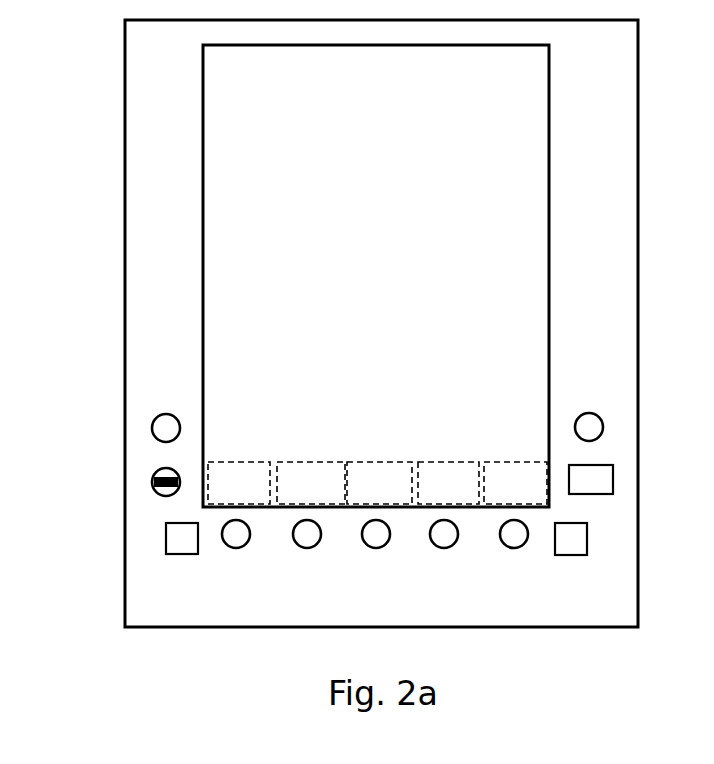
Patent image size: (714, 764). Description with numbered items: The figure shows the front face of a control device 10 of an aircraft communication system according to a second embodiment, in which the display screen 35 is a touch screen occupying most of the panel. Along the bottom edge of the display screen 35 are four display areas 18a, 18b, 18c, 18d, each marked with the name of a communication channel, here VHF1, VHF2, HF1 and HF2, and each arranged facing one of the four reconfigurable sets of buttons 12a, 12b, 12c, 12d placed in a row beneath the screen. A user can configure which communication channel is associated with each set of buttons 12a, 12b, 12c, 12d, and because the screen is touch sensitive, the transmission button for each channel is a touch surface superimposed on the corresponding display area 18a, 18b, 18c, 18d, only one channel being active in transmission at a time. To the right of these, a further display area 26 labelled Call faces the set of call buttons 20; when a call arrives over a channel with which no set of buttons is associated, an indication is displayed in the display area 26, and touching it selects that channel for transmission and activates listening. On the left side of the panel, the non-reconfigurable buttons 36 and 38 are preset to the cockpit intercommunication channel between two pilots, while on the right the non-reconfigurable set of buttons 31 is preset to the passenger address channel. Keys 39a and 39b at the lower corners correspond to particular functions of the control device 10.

The control device 10 is at (125, 82).
The display screen 35 is at (203, 192).
The button 36 is at (152, 428).
The button 38 is at (152, 482).
The set of buttons 31 is at (589, 402).
The key 39a is at (182, 554).
The key 39b is at (568, 555).
The display area 18a is at (245, 461).
The display area 18b is at (310, 461).
The display area 18c is at (381, 461).
The display area 18d is at (450, 461).
The display area 26 is at (513, 461).
The set of buttons 12a is at (236, 555).
The set of buttons 12b is at (307, 555).
The set of buttons 12c is at (376, 555).
The set of buttons 12d is at (444, 555).
The set of call buttons 20 is at (514, 555).